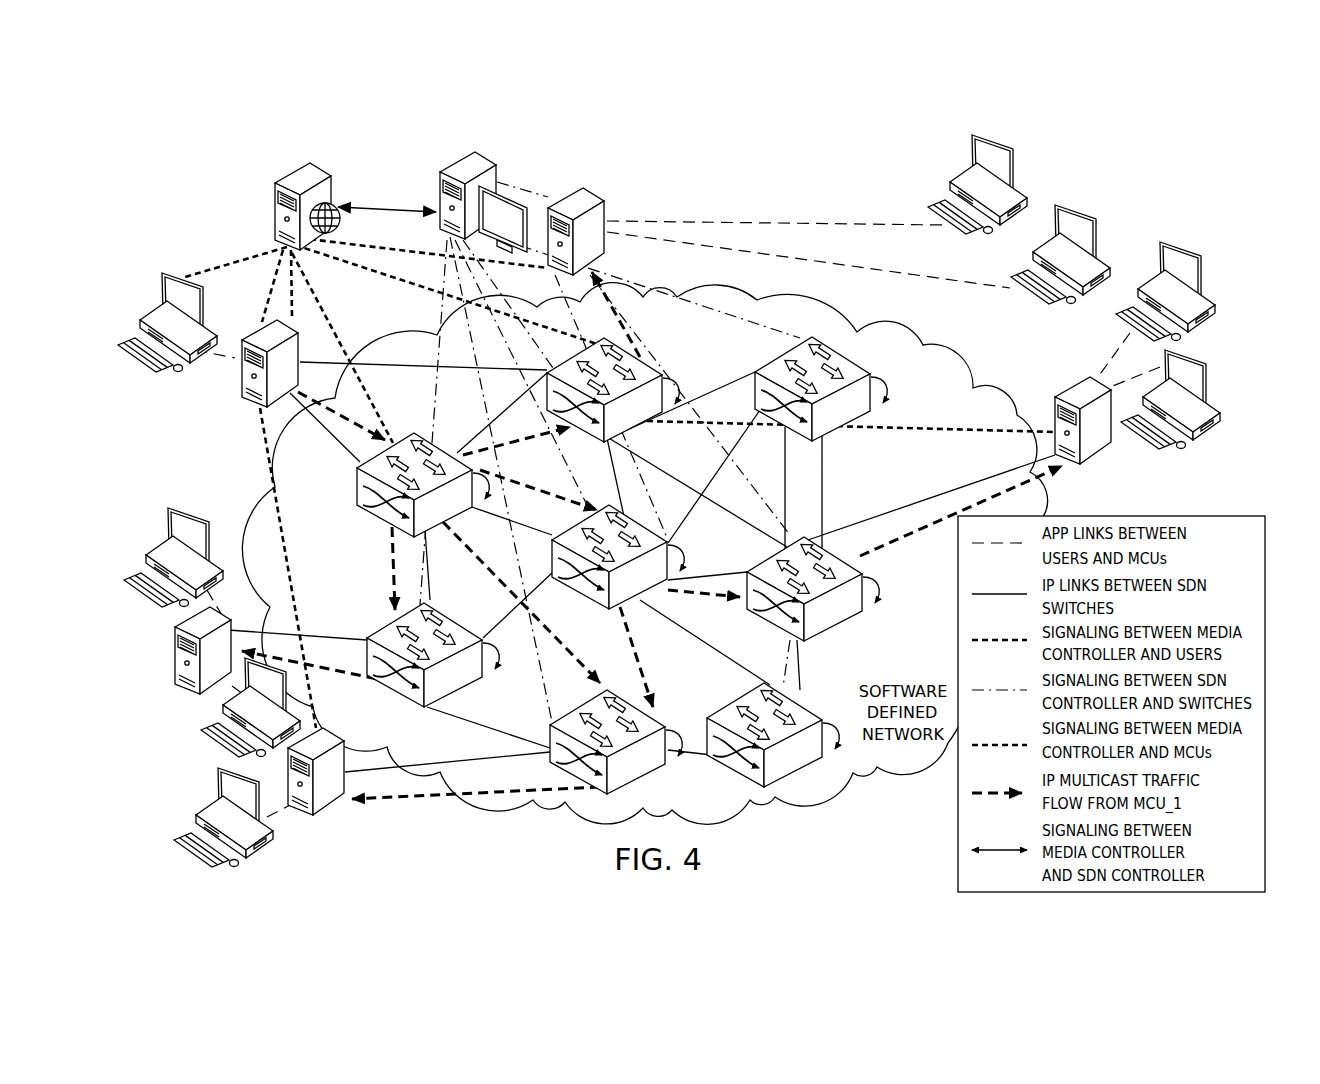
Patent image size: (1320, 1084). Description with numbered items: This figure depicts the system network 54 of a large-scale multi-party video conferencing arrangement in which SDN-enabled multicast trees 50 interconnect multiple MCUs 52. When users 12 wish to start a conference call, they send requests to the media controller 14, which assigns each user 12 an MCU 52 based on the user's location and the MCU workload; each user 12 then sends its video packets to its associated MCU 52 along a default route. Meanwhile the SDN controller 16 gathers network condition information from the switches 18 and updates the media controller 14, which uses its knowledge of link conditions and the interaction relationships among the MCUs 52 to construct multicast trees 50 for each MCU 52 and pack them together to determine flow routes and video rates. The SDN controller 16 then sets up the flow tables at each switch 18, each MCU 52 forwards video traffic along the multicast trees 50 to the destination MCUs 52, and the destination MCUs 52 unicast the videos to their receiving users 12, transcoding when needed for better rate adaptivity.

The user 12 is at (189, 278).
The media controller 14 is at (277, 195).
The SDN controller 16 is at (438, 184).
The switch 18 is at (827, 435).
The multicast tree 50 is at (262, 299).
The MCU 52 is at (608, 196).
The system network 54 is at (909, 177).